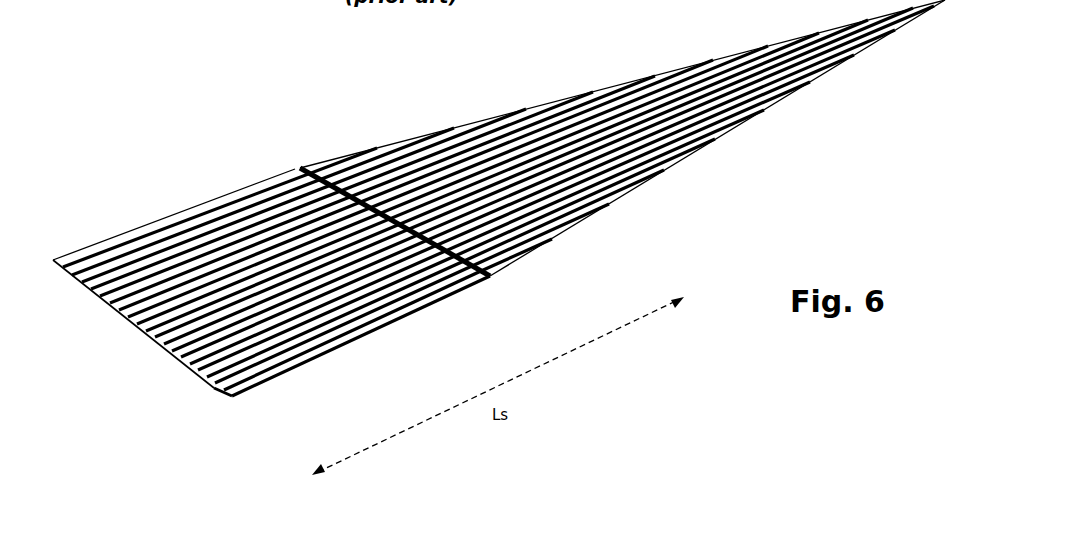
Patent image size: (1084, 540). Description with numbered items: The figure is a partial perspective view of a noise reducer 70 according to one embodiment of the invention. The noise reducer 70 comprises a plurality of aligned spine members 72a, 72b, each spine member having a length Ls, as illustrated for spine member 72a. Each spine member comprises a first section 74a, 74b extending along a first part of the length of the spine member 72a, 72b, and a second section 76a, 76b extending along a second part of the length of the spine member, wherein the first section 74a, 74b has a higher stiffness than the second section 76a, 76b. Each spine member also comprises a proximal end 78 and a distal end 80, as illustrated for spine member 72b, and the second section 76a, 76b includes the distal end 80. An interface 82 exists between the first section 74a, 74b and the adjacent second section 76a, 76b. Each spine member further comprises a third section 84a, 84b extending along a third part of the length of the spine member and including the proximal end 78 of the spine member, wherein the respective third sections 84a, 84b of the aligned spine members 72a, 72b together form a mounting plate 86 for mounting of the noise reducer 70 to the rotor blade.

The noise reducer 70 is at (499, 241).
The mounting plate 86 is at (493, 244).
The proximal end 78 is at (221, 393).
The third section 84a is at (252, 391).
The third section 84b is at (228, 376).
The spine member 72a is at (541, 253).
The first section 74a is at (518, 267).
The second section 76a is at (571, 247).
The interface 82 is at (553, 243).
The spine member 72b is at (598, 213).
The first section 74b is at (560, 228).
The second section 76b is at (625, 205).
The distal end 80 is at (653, 184).